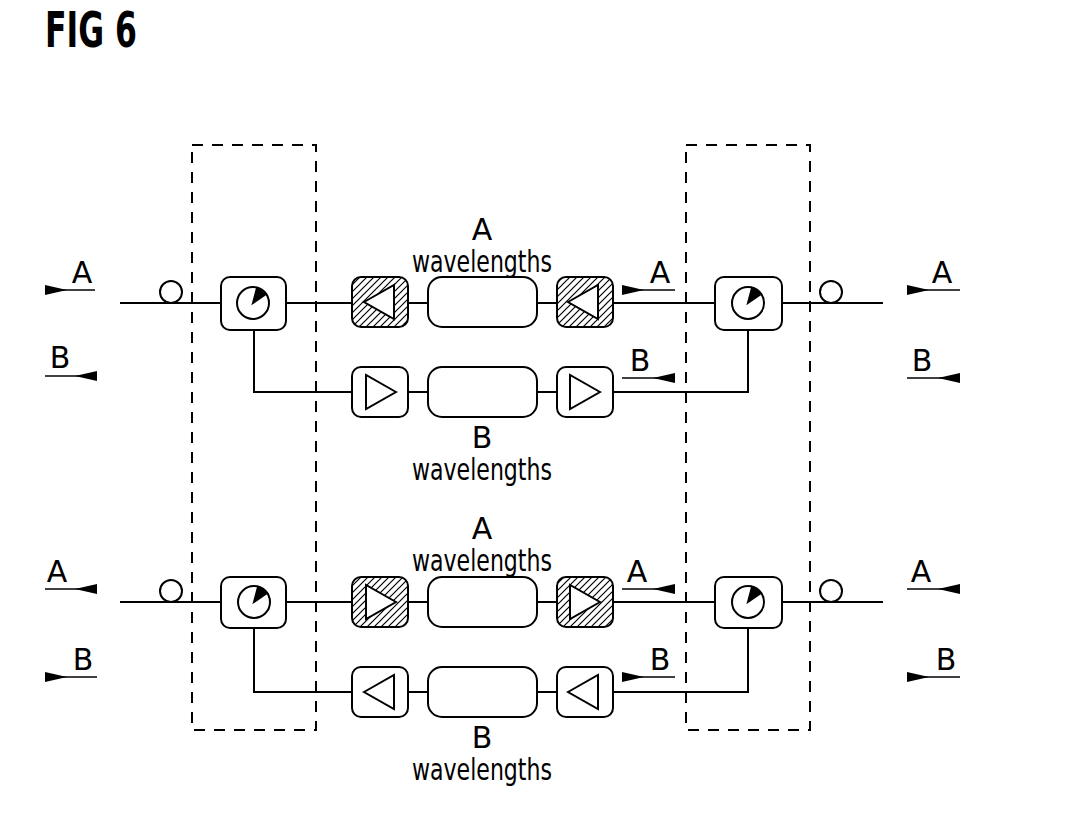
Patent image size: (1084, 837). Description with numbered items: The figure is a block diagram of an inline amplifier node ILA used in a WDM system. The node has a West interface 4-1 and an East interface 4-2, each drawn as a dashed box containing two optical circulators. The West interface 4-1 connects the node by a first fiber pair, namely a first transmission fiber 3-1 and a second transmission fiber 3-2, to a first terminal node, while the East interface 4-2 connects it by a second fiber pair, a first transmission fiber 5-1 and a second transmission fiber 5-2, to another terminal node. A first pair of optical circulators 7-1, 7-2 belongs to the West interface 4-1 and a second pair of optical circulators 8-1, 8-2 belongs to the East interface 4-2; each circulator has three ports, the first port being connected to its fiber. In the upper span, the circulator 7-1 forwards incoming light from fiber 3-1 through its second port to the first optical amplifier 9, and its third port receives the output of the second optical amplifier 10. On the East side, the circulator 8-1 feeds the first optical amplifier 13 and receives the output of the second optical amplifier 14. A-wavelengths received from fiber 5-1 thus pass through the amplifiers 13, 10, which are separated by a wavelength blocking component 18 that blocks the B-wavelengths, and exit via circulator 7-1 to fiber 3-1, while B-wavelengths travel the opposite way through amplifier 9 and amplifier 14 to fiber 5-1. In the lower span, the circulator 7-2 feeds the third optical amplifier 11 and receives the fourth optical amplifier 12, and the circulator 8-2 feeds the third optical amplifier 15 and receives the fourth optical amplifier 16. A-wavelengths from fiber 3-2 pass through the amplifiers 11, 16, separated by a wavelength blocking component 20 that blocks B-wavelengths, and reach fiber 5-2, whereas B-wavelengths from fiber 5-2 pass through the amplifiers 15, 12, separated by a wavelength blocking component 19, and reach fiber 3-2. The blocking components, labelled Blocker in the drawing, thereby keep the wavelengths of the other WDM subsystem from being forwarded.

The inline amplifier node ILA is at (885, 95).
The West interface 4-1 is at (250, 145).
The East interface 4-2 is at (741, 145).
The first transmission fiber 3-1 is at (170, 281).
The second transmission fiber 3-2 is at (170, 580).
The first transmission fiber 5-1 is at (832, 281).
The second transmission fiber 5-2 is at (832, 580).
The first optical circulator 7-1 is at (247, 287).
The second optical circulator 7-2 is at (247, 586).
The first optical circulator 8-1 is at (741, 287).
The second optical circulator 8-2 is at (741, 586).
The first optical amplifier 9 is at (381, 418).
The second optical amplifier 10 is at (382, 277).
The third optical amplifier 11 is at (541, 378).
The fourth optical amplifier 12 is at (381, 718).
The first optical amplifier 13 is at (585, 277).
The second optical amplifier 14 is at (581, 418).
The third optical amplifier 15 is at (581, 718).
The fourth optical amplifier 16 is at (585, 577).
The wavelength blocking component 18 is at (424, 316).
The wavelength blocking component 19 is at (541, 678).
The wavelength blocking component 20 is at (424, 616).